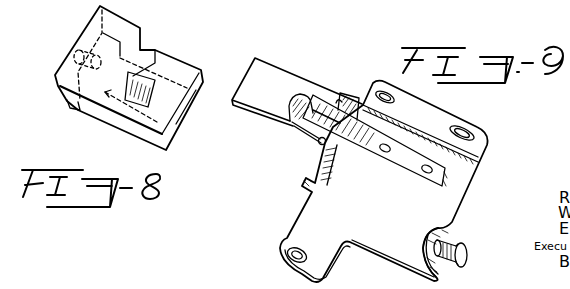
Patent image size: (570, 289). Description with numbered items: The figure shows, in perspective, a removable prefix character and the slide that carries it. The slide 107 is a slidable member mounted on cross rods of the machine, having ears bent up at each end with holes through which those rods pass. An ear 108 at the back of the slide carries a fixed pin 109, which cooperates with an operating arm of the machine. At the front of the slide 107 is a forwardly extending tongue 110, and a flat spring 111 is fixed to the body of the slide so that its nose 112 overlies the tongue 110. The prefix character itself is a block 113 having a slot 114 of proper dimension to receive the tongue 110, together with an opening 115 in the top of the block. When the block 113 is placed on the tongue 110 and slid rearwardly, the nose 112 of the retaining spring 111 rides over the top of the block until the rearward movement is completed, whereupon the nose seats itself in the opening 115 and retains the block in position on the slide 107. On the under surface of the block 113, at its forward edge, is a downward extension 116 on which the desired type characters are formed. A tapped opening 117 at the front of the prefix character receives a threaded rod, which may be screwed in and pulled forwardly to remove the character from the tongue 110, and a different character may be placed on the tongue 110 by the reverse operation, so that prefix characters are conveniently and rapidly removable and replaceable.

In FIG. 9, the slide 107 is at (384, 181).
In FIG. 9, the ear 108 is at (438, 226).
In FIG. 9, the pin 109 is at (471, 254).
In FIG. 9, the tongue 110 is at (275, 82).
In FIG. 9, the flat spring 111 is at (354, 137).
In FIG. 9, the nose 112 is at (288, 123).
In FIG. 8, the block 113 is at (120, 118).
In FIG. 8, the slot 114 is at (178, 114).
In FIG. 8, the opening 115 is at (150, 83).
In FIG. 8, the downward extension 116 is at (68, 112).
In FIG. 8, the tapped opening 117 is at (76, 50).